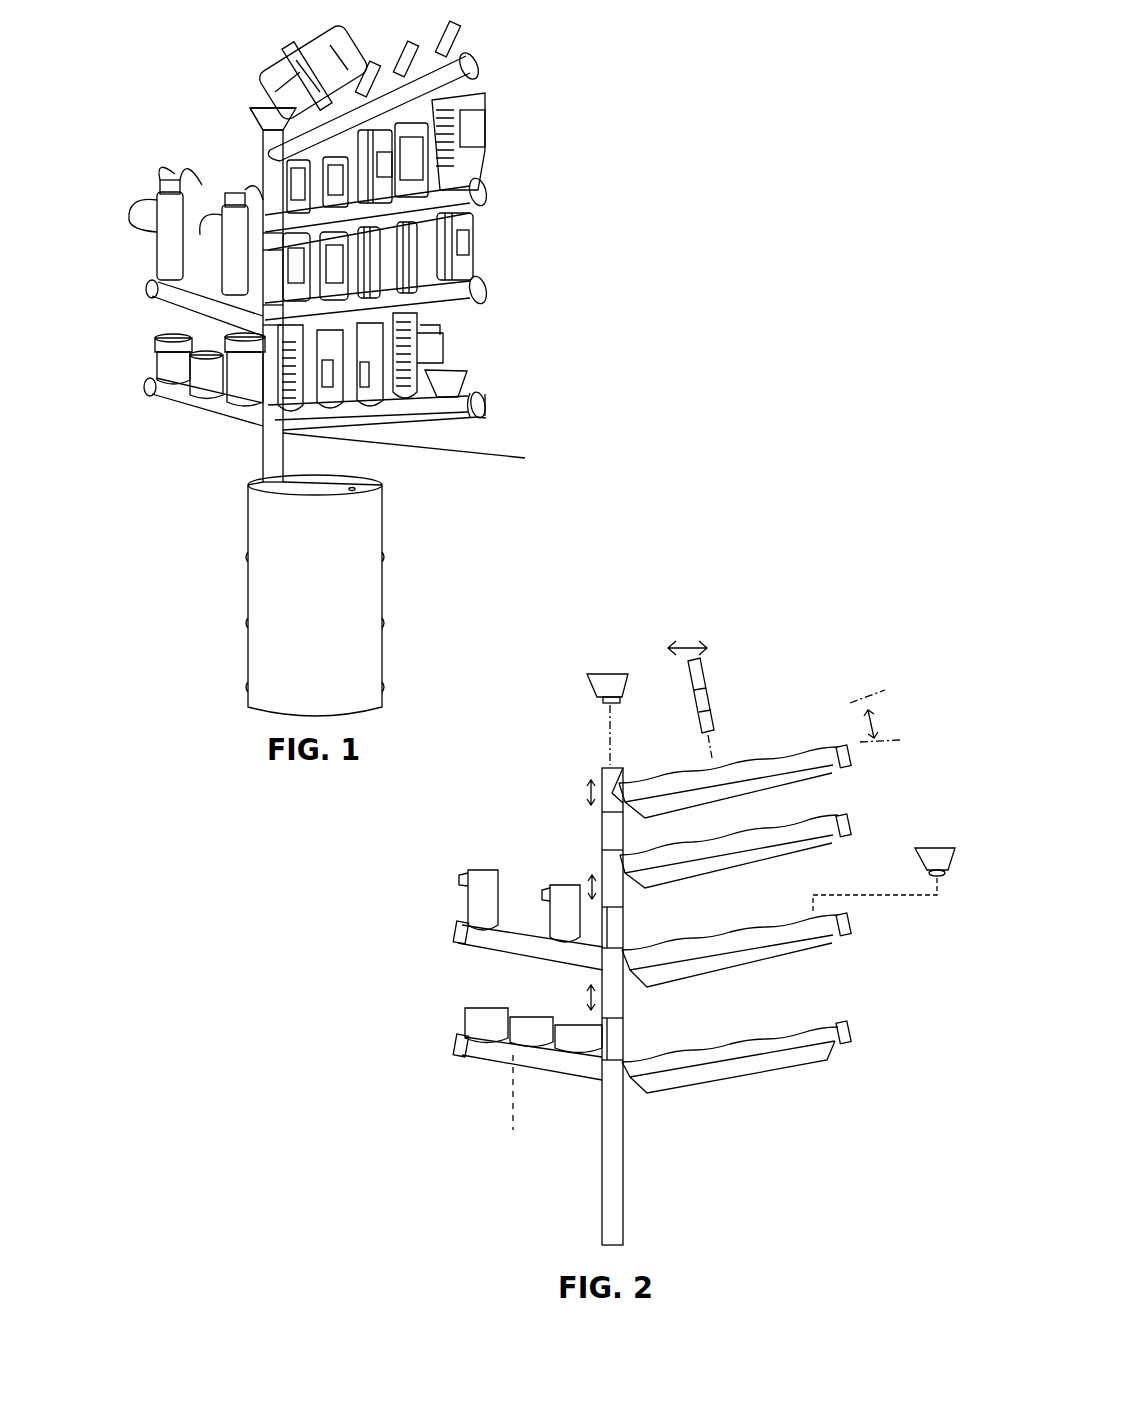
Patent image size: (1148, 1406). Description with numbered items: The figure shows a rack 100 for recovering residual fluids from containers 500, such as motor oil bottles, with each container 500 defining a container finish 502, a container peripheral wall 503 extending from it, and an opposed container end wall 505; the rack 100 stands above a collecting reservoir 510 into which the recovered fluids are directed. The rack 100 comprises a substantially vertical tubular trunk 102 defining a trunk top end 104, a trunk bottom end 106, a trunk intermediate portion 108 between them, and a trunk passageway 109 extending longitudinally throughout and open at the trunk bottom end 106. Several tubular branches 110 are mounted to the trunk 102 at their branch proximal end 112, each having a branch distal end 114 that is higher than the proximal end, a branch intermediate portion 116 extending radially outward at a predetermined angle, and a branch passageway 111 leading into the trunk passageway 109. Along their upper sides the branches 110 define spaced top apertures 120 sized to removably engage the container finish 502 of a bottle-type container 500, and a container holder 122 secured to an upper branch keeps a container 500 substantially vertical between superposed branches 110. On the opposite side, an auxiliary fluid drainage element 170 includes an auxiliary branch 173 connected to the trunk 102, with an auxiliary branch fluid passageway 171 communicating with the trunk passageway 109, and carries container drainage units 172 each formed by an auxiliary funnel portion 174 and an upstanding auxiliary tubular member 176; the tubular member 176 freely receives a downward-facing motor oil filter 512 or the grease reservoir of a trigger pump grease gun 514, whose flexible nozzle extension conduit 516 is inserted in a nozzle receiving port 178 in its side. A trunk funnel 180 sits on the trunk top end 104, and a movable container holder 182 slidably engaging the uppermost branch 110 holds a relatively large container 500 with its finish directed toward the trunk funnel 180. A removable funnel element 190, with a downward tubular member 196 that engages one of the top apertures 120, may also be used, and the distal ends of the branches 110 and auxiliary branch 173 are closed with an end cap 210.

In FIG. 1, the rack 100 is at (545, 250).
In FIG. 2, the rack 100 is at (364, 878).
In FIG. 1, the trunk 102 is at (290, 449).
In FIG. 2, the trunk 102 is at (628, 1207).
In FIG. 1, the trunk top end 104 is at (262, 137).
In FIG. 2, the trunk top end 104 is at (600, 768).
In FIG. 1, the trunk bottom end 106 is at (253, 480).
In FIG. 2, the trunk bottom end 106 is at (600, 1240).
In FIG. 1, the trunk intermediate portion 108 is at (450, 344).
In FIG. 2, the trunk intermediate portion 108 is at (615, 990).
In FIG. 2, the trunk passageway 109 is at (620, 1140).
In FIG. 1, the branch 110 is at (484, 66).
In FIG. 2, the branch 110 is at (845, 745).
In FIG. 2, the branch passageway 111 is at (855, 1007).
In FIG. 1, the branch proximal end 112 is at (365, 410).
In FIG. 2, the branch proximal end 112 is at (630, 1070).
In FIG. 1, the branch distal end 114 is at (485, 418).
In FIG. 2, the branch distal end 114 is at (836, 1044).
In FIG. 1, the branch intermediate portion 116 is at (480, 415).
In FIG. 2, the branch intermediate portion 116 is at (763, 1050).
In FIG. 1, the top apertures 120 is at (381, 252).
In FIG. 2, the top apertures 120 is at (707, 762).
In FIG. 1, the container holder 122 is at (456, 326).
In FIG. 2, the container holder 122 is at (803, 775).
In FIG. 1, the auxiliary fluid drainage element 170 is at (150, 390).
In FIG. 2, the auxiliary fluid drainage element 170 is at (455, 1050).
In FIG. 2, the auxiliary branch fluid passageway 171 is at (511, 1109).
In FIG. 1, the container drainage unit 172 is at (150, 284).
In FIG. 2, the container drainage unit 172 is at (456, 945).
In FIG. 1, the auxiliary branch 173 is at (190, 292).
In FIG. 2, the auxiliary branch 173 is at (533, 948).
In FIG. 2, the auxiliary funnel portion 174 is at (548, 940).
In FIG. 1, the auxiliary tubular member 176 is at (172, 250).
In FIG. 2, the auxiliary tubular member 176 is at (460, 937).
In FIG. 1, the nozzle receiving port 178 is at (150, 240).
In FIG. 2, the nozzle receiving port 178 is at (468, 896).
In FIG. 1, the trunk funnel 180 is at (256, 115).
In FIG. 2, the trunk funnel 180 is at (603, 672).
In FIG. 1, the movable container holder 182 is at (305, 80).
In FIG. 2, the movable container holder 182 is at (700, 672).
In FIG. 1, the removable funnel element 190 is at (474, 380).
In FIG. 2, the removable funnel element 190 is at (934, 847).
In FIG. 1, the tubular member 196 is at (155, 368).
In FIG. 2, the tubular member 196 is at (478, 1022).
In FIG. 1, the end cap 210 is at (492, 402).
In FIG. 2, the end cap 210 is at (462, 1058).
In FIG. 1, the containers 500 is at (290, 62).
In FIG. 1, the container finish 502 is at (250, 108).
In FIG. 1, the container peripheral wall 503 is at (293, 83).
In FIG. 1, the container end wall 505 is at (343, 63).
In FIG. 1, the collecting reservoir 510 is at (265, 596).
In FIG. 1, the motor oil filter 512 is at (167, 348).
In FIG. 1, the trigger pump grease gun 514 is at (130, 197).
In FIG. 1, the flexible nozzle extension conduit 516 is at (137, 217).